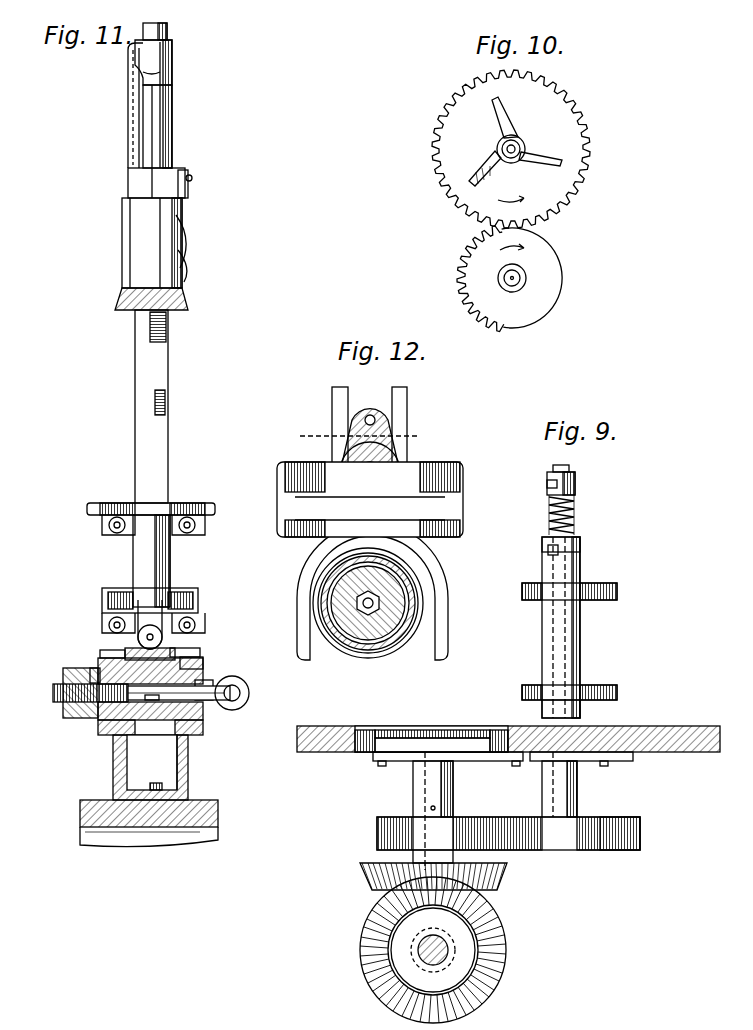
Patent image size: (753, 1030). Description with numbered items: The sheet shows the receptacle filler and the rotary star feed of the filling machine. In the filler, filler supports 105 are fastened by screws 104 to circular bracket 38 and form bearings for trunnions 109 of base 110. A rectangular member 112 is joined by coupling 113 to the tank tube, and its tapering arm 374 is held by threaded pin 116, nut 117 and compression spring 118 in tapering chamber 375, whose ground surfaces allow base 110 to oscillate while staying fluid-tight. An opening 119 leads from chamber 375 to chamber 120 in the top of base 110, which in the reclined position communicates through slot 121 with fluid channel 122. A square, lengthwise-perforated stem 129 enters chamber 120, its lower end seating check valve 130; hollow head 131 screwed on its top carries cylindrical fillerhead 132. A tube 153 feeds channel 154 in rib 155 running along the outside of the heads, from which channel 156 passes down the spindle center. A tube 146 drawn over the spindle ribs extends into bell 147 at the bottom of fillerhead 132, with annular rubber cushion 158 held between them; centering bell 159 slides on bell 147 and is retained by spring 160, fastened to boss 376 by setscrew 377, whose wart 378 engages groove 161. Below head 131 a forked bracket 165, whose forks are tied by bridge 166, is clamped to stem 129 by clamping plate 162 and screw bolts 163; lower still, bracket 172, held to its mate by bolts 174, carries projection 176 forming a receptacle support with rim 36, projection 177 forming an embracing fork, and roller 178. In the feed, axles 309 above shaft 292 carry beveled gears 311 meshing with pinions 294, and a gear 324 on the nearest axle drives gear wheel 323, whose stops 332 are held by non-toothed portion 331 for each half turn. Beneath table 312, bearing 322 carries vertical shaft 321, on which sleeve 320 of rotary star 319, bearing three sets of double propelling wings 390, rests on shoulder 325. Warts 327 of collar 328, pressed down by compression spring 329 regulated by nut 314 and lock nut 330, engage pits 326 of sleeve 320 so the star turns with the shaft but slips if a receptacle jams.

In FIG. 11, the rim 36 is at (105, 591).
In FIG. 11, the circular bracket 38 is at (82, 814).
In FIG. 11, the screws 104 is at (162, 784).
In FIG. 11, the filler supports 105 is at (115, 771).
In FIG. 11, the trunnions 109 is at (105, 659).
In FIG. 11, the base 110 is at (182, 649).
In FIG. 11, the rectangular member 112 is at (200, 722).
In FIG. 11, the coupling 113 is at (241, 707).
In FIG. 11, the threaded pin 116 is at (53, 692).
In FIG. 11, the nut 117 is at (66, 677).
In FIG. 11, the compression spring 118 is at (95, 667).
In FIG. 11, the opening 119 is at (190, 744).
In FIG. 11, the chamber 120 is at (100, 629).
In FIG. 11, the slot 121 is at (150, 701).
In FIG. 11, the fluid channel 122 is at (241, 692).
In FIG. 11, the stem 129 is at (160, 381).
In FIG. 12, the stem 129 is at (408, 436).
In FIG. 11, the check valve 130 is at (205, 659).
In FIG. 12, the hollow head 131 is at (385, 404).
In FIG. 11, the fillerhead 132 is at (160, 126).
In FIG. 12, the tube 146 is at (400, 653).
In FIG. 11, the bell 147 is at (137, 182).
In FIG. 12, the bell 147 is at (345, 653).
In FIG. 12, the tube 153 is at (376, 419).
In FIG. 11, the channel 154 is at (133, 125).
In FIG. 11, the rib 155 is at (140, 97).
In FIG. 12, the channel 156 is at (378, 598).
In FIG. 12, the annular rubber cushion 158 is at (400, 612).
In FIG. 11, the centering bell 159 is at (130, 256).
In FIG. 12, the centering bell 159 is at (368, 660).
In FIG. 11, the spring 160 is at (185, 194).
In FIG. 11, the groove 161 is at (186, 272).
In FIG. 12, the clamping plate 162 is at (282, 509).
In FIG. 12, the screw bolts 163 is at (290, 529).
In FIG. 12, the forked bracket 165 is at (332, 409).
In FIG. 12, the bridge 166 is at (305, 436).
In FIG. 11, the bracket 172 is at (170, 554).
In FIG. 11, the bolts 174 is at (105, 527).
In FIG. 11, the projection 176 is at (192, 619).
In FIG. 11, the projection 177 is at (95, 509).
In FIG. 12, the projection 177 is at (302, 655).
In FIG. 11, the roller 178 is at (158, 627).
In FIG. 9, the shaft 292 is at (420, 949).
In FIG. 9, the pinions 294 is at (495, 974).
In FIG. 9, the axles 309 is at (430, 780).
In FIG. 9, the beveled gears 311 is at (497, 881).
In FIG. 9, the table 312 is at (690, 735).
In FIG. 9, the nut 314 is at (577, 483).
In FIG. 10, the rotary star 319 is at (470, 183).
In FIG. 9, the sleeve 320 is at (582, 647).
In FIG. 9, the vertical shaft 321 is at (562, 563).
In FIG. 9, the bearing 322 is at (577, 780).
In FIG. 10, the gear wheel 323 is at (568, 152).
In FIG. 9, the gear wheel 323 is at (620, 851).
In FIG. 10, the gear 324 is at (542, 299).
In FIG. 9, the gear 324 is at (377, 834).
In FIG. 9, the shoulder 325 is at (542, 707).
In FIG. 9, the pits 326 is at (552, 551).
In FIG. 9, the warts 327 is at (582, 547).
In FIG. 9, the collar 328 is at (542, 541).
In FIG. 9, the compression spring 329 is at (577, 509).
In FIG. 9, the lock nut 330 is at (547, 481).
In FIG. 10, the non-toothed portion 331 is at (558, 264).
In FIG. 10, the stops 332 is at (578, 109).
In FIG. 11, the tapering arm 374 is at (100, 724).
In FIG. 11, the tapering chamber 375 is at (202, 683).
In FIG. 11, the boss 376 is at (183, 168).
In FIG. 11, the setscrew 377 is at (192, 177).
In FIG. 11, the wart 378 is at (185, 244).
In FIG. 10, the double propelling wings 390 is at (560, 163).
In FIG. 9, the double propelling wings 390 is at (617, 590).